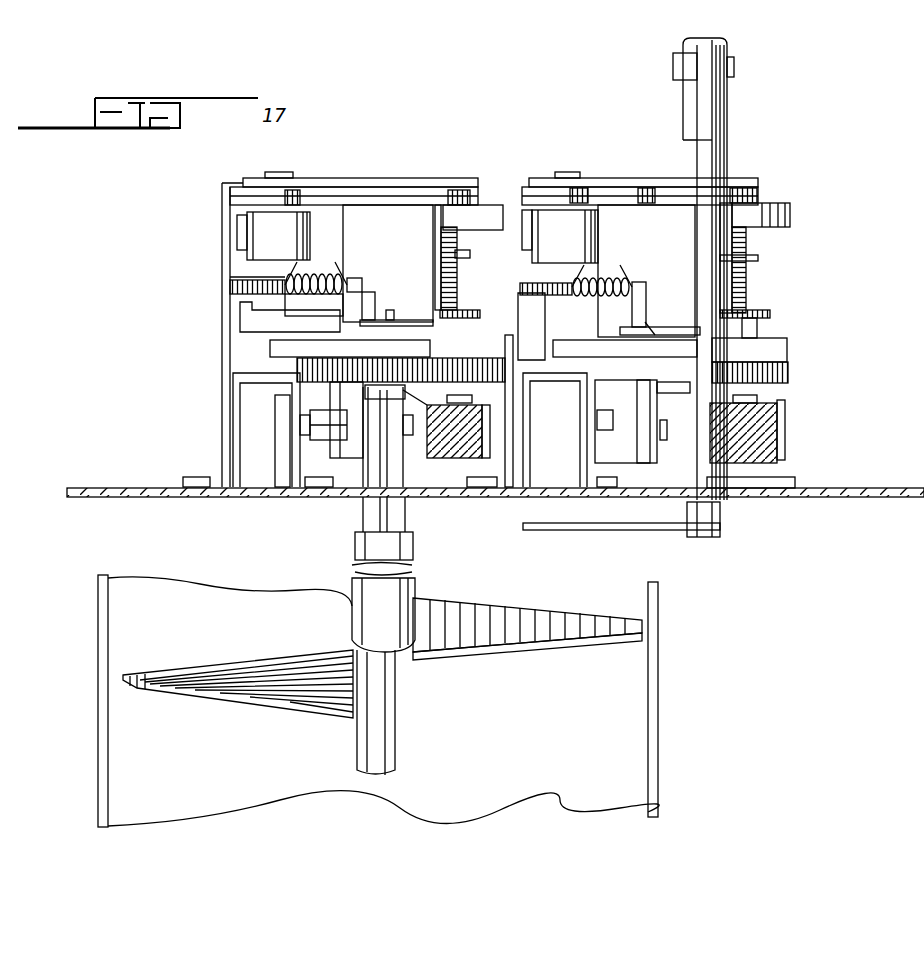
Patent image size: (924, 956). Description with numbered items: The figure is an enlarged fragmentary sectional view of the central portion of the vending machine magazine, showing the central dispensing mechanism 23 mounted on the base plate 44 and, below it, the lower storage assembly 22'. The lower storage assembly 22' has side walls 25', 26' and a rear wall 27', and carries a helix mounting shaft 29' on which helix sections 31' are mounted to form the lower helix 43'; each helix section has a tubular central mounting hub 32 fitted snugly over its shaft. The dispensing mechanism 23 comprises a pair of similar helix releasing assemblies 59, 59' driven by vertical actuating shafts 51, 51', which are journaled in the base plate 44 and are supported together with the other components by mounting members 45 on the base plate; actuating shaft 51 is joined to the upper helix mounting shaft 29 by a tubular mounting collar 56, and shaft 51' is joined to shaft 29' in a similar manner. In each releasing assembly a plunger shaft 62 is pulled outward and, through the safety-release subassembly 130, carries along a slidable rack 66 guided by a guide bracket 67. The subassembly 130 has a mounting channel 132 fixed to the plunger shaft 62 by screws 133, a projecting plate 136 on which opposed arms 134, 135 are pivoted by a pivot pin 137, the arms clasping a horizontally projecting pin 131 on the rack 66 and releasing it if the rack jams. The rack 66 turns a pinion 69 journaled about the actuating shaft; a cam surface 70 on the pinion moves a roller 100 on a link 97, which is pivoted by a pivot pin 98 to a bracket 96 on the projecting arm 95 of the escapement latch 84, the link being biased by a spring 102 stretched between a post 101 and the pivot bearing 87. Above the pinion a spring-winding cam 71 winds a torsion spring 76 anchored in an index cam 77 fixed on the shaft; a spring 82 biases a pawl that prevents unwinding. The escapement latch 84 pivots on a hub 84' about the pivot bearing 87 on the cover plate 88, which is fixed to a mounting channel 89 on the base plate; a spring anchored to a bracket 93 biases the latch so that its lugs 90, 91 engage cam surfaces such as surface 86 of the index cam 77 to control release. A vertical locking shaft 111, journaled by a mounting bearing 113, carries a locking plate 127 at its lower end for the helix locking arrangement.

The lower storage assembly 22' is at (337, 701).
The central dispensing mechanism 23 is at (152, 305).
The side wall 25' is at (70, 701).
The side wall 26' is at (659, 699).
The rear wall 27' is at (561, 632).
The helix mounting shaft 29 is at (737, 265).
The helix mounting shaft 29' is at (361, 669).
The helix section 31' is at (238, 692).
The tubular central mounting hub 32 is at (408, 700).
The lower helix 43' is at (643, 711).
The base plate 44 is at (85, 487).
The mounting foot 45 is at (195, 477).
The actuating shaft 51 is at (723, 269).
The actuating shaft 51' is at (366, 459).
The tubular mounting collar 56 is at (360, 545).
The helix releasing assembly 59 is at (814, 263).
The helix releasing assembly 59' is at (128, 341).
The plunger shaft 62 is at (798, 430).
The slidable rack 66 is at (233, 380).
The guide bracket 67 is at (507, 335).
The pinion 69 is at (297, 365).
The cam surface 70 is at (240, 318).
The spring-winding cam 71 is at (460, 310).
The torsion spring 76 is at (441, 262).
The index cam 77 is at (455, 190).
The spring 82 is at (240, 278).
The escapement latch 84 is at (494, 176).
The hub 84' is at (417, 205).
The cam surface 86 is at (483, 205).
The pivot bearing 87 is at (280, 160).
The cover plate 88 is at (262, 178).
The mounting channel 89 is at (232, 285).
The lug 90 is at (243, 230).
The lug 91 is at (438, 225).
The bracket 93 is at (468, 255).
The projecting arm 95 is at (350, 215).
The bracket 96 is at (376, 318).
The link 97 is at (720, 352).
The pivot pin 98 is at (398, 318).
The roller 100 is at (388, 318).
The post 101 is at (355, 278).
The spring 102 is at (300, 275).
The vertical locking shaft 111 is at (705, 127).
The mounting bearing 113 is at (720, 520).
The locking plate 127 is at (667, 530).
The safety-release subassembly 130 is at (239, 434).
The horizontally projecting pin 131 is at (300, 425).
The mounting channel 132 is at (490, 458).
The screw 133 is at (478, 382).
The arm 134 is at (320, 398).
The arm 135 is at (330, 450).
The projecting plate 136 is at (375, 398).
The pivot pin 137 is at (385, 445).